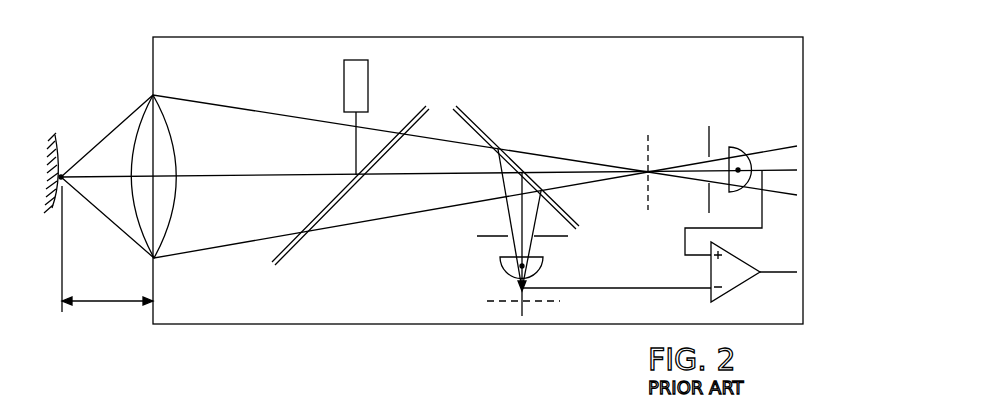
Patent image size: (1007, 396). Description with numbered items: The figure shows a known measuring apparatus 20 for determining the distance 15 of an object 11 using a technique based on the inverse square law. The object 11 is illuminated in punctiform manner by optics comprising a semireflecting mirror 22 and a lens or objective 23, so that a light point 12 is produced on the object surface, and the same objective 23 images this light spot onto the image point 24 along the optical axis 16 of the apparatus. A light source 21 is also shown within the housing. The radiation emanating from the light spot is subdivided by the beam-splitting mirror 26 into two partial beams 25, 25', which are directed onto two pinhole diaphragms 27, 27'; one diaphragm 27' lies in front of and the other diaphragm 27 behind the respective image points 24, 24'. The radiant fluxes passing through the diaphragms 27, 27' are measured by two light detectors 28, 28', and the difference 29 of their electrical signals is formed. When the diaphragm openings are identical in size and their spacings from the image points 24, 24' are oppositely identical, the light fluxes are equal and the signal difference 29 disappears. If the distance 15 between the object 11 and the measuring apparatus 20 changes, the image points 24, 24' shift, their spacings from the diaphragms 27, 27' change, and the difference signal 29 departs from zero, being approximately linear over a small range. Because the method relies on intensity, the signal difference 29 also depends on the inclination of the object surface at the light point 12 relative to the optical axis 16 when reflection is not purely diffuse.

The object 11 is at (55, 134).
The light point 12 is at (62, 172).
The distance 15 is at (108, 299).
The optical axis 16 is at (227, 179).
The measuring apparatus 20 is at (150, 47).
The light source 21 is at (345, 77).
The semireflecting mirror 22 is at (295, 245).
The lens or objective 23 is at (161, 134).
The image point 24 is at (671, 162).
The image point 24' is at (527, 268).
The partial beam 25 is at (429, 176).
The partial beam 25' is at (496, 219).
The beam-splitting mirror 26 is at (478, 131).
The pinhole diaphragm 27 is at (732, 155).
The pinhole diaphragm 27' is at (568, 256).
The light detector 28 is at (737, 187).
The light detector 28' is at (497, 273).
The difference signal 29 is at (769, 273).